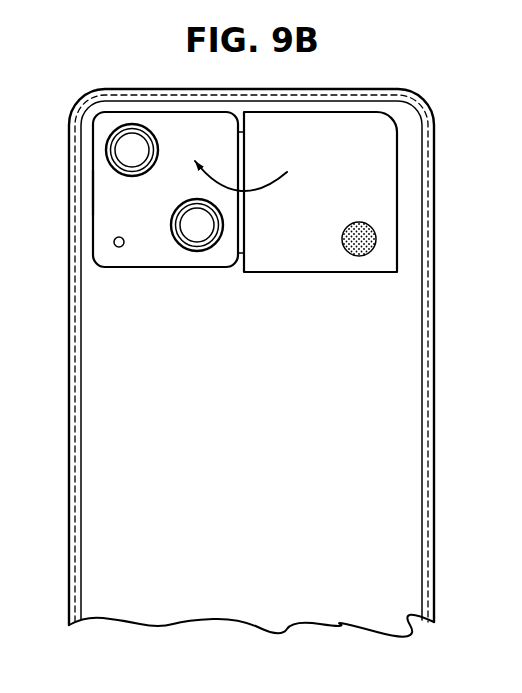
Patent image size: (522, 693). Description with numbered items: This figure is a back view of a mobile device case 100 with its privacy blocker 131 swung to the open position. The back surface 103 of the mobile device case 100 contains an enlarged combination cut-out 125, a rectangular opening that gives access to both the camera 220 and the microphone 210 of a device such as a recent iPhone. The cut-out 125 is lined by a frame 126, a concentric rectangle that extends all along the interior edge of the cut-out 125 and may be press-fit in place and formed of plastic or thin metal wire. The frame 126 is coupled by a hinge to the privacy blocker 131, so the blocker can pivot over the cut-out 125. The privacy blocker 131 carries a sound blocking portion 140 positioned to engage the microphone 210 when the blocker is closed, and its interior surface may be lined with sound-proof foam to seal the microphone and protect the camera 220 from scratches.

The mobile device case 100 is at (62, 265).
The back surface 103 is at (243, 403).
The combination cut-out 125 is at (165, 130).
The frame 126 is at (93, 188).
The privacy blocker 131 is at (338, 150).
The sound blocking portion 140 is at (362, 260).
The microphone 210 is at (115, 248).
The camera 220 is at (129, 150).